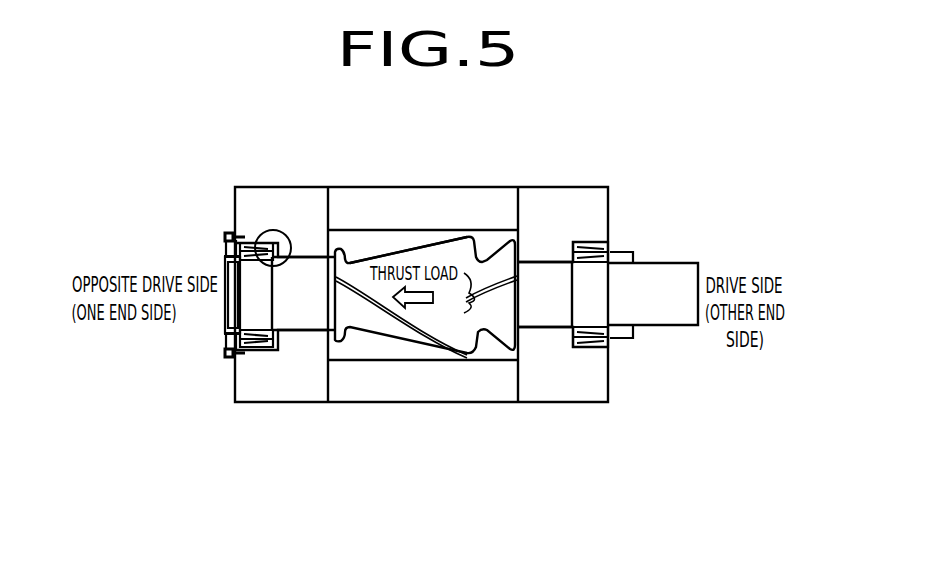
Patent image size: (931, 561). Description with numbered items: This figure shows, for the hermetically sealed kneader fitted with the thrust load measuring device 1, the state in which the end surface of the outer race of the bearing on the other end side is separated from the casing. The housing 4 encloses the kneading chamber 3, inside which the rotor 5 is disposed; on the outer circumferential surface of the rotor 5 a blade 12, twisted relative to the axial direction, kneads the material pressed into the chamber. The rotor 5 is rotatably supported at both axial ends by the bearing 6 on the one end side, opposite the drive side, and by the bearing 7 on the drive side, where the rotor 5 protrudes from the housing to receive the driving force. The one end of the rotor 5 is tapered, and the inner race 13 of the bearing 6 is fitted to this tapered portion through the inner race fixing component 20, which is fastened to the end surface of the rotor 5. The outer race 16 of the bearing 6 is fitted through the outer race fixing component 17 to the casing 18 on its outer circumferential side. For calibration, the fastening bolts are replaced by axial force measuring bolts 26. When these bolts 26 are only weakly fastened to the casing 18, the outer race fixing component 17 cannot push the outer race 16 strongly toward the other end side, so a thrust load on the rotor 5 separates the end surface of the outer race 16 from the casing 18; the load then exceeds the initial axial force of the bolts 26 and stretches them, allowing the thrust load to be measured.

The thrust load measuring device 1 is at (203, 181).
The kneading chamber 3 is at (485, 241).
The housing 4 is at (393, 197).
The rotor 5 is at (678, 268).
The bearing 6 is at (270, 222).
The bearing 7 is at (612, 242).
The blade 12 is at (445, 235).
The inner race 13 is at (232, 256).
The outer race 16 is at (270, 235).
The outer race fixing component 17 is at (232, 240).
The casing 18 is at (250, 195).
The inner race fixing component 20 is at (230, 276).
The axial force measuring bolt 26 is at (227, 236).